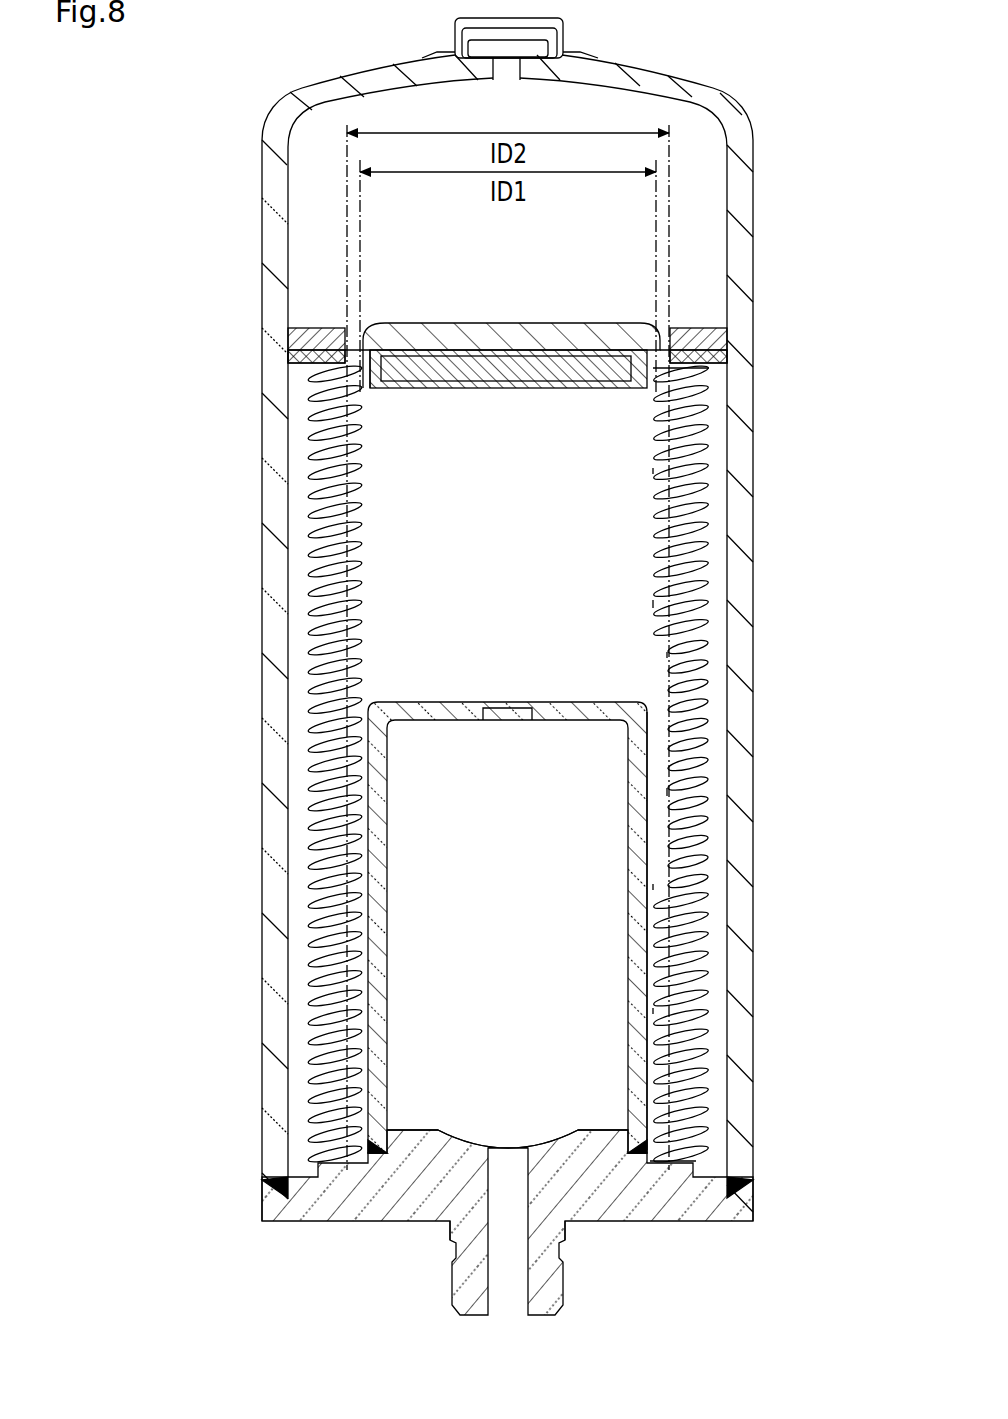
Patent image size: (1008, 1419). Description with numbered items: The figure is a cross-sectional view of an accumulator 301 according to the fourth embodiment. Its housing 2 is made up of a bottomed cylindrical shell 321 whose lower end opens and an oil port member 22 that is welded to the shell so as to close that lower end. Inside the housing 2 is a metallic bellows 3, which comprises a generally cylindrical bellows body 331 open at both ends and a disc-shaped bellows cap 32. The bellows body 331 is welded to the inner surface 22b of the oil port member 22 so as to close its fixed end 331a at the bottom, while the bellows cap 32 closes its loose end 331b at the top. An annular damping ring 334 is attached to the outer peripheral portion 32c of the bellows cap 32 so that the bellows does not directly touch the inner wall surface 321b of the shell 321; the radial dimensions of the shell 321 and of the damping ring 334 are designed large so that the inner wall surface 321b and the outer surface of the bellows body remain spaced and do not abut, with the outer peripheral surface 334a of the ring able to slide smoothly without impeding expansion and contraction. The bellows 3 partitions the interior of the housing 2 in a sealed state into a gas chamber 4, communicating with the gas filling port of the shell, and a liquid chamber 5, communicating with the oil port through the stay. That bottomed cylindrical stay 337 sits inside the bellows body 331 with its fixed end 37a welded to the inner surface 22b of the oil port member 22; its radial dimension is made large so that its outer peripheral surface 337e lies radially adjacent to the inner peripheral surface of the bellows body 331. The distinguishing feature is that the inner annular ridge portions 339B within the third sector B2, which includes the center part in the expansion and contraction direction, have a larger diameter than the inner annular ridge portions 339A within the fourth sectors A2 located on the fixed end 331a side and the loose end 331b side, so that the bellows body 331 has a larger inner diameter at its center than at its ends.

The accumulator 301 is at (300, 70).
The shell 321 is at (717, 80).
The inner wall surface 321b is at (288, 778).
The housing 2 is at (768, 307).
The gas chamber 4 is at (317, 185).
The damping ring 334 is at (300, 320).
The support portion lower surface 334a is at (288, 345).
The bellows cap 32 is at (505, 320).
The outer peripheral portion 32c is at (345, 325).
The bellows 3 is at (560, 300).
The liquid chamber 5 is at (430, 498).
The bellows body 331 is at (724, 762).
The fixed end 331a is at (700, 1166).
The loose end 331b is at (705, 390).
The fourth sectors A2 is at (656, 470).
The third sector B2 is at (666, 655).
The inner annular ridge portions 339A is at (656, 604).
The inner annular ridge portions 339B is at (665, 792).
The stay 337 is at (455, 700).
The outer peripheral surface 337e is at (655, 843).
The oil port member 22 is at (737, 1231).
The inner surface 22b is at (627, 1165).
The fixed end 37a is at (400, 1148).